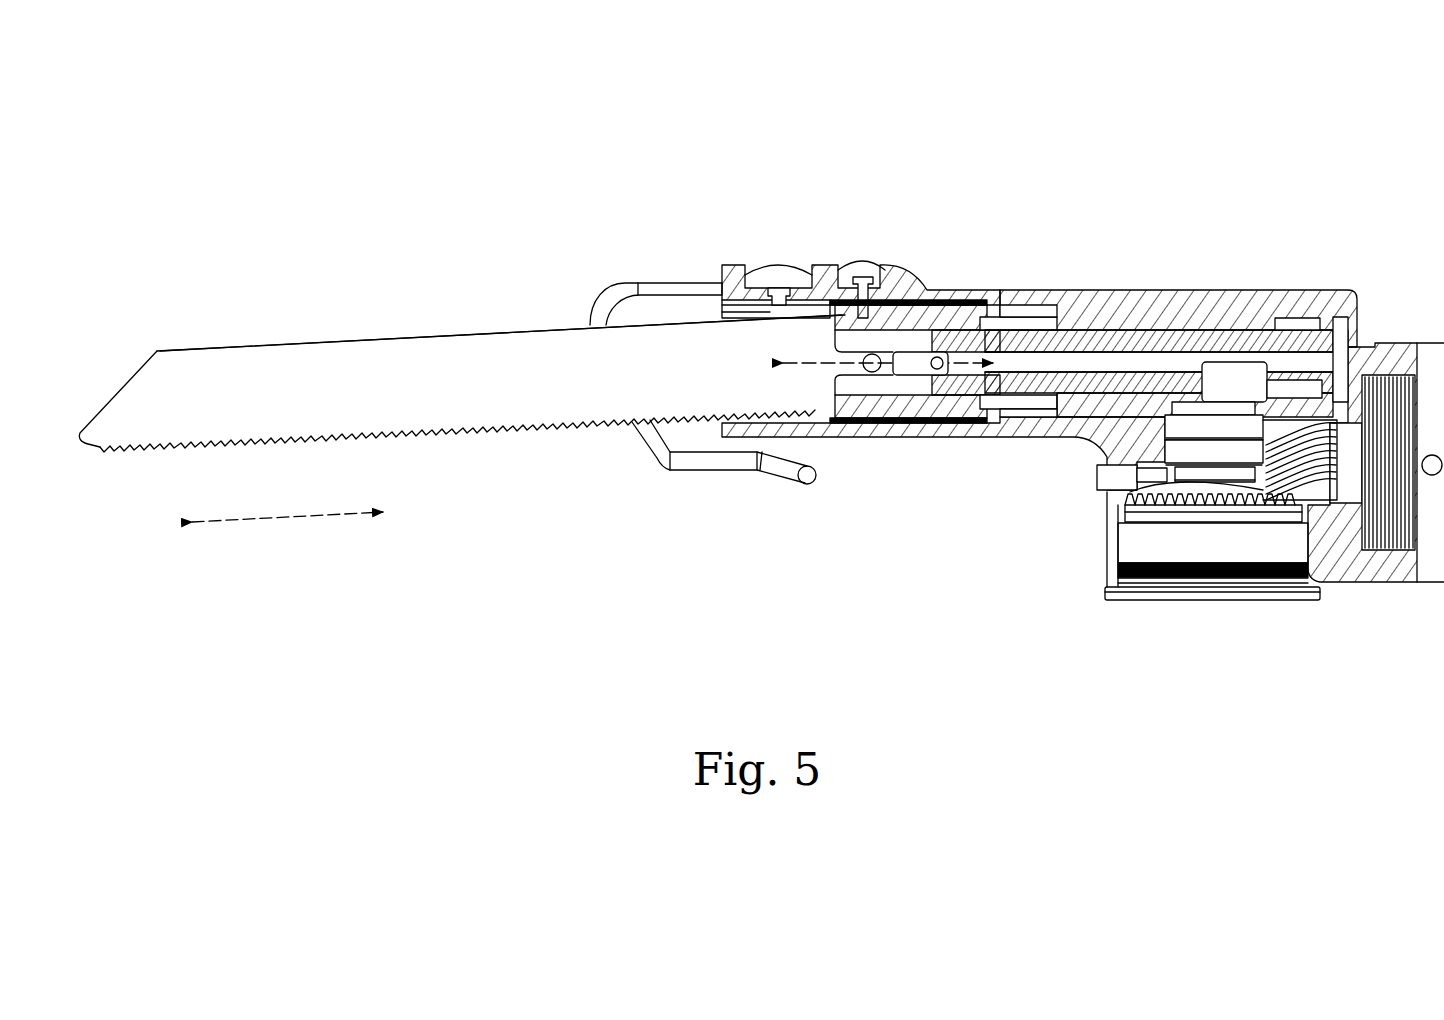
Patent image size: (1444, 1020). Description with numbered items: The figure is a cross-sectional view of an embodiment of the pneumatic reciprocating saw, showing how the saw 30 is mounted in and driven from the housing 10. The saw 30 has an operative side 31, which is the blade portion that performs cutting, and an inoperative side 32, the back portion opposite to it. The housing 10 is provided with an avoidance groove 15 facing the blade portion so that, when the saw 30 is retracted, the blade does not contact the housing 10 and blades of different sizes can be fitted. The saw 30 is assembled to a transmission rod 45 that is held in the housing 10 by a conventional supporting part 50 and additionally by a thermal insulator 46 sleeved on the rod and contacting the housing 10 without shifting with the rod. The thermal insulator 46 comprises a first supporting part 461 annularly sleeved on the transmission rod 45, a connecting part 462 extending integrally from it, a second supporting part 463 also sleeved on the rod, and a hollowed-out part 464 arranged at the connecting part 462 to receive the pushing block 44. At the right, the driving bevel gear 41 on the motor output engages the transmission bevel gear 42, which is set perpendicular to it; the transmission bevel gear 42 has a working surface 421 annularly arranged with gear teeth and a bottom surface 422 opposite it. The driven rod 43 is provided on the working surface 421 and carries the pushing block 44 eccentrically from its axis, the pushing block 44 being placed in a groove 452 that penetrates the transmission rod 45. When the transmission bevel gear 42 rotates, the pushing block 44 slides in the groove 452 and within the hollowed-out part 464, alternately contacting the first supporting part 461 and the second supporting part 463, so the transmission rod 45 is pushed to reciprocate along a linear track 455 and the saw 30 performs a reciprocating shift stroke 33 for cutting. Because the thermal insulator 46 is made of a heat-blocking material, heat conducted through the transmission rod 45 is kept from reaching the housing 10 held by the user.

The housing 10 is at (910, 268).
The avoidance groove 15 is at (765, 422).
The saw 30 is at (462, 321).
The operative side 31 is at (278, 437).
The inoperative side 32 is at (355, 340).
The reciprocating shift stroke 33 is at (287, 522).
The driving bevel gear 41 is at (1328, 600).
The transmission bevel gear 42 is at (1131, 552).
The working surface 421 is at (1153, 485).
The bottom surface 422 is at (1157, 523).
The driven rod 43 is at (1182, 452).
The pushing block 44 is at (1228, 378).
The transmission rod 45 is at (1317, 325).
The groove 452 is at (1278, 397).
The linear track 455 is at (840, 365).
The thermal insulator 46 is at (1201, 292).
The first supporting part 461 is at (1068, 310).
The connecting part 462 is at (1188, 323).
The second supporting part 463 is at (1357, 360).
The hollowed-out part 464 is at (1147, 400).
The supporting part 50 is at (842, 310).